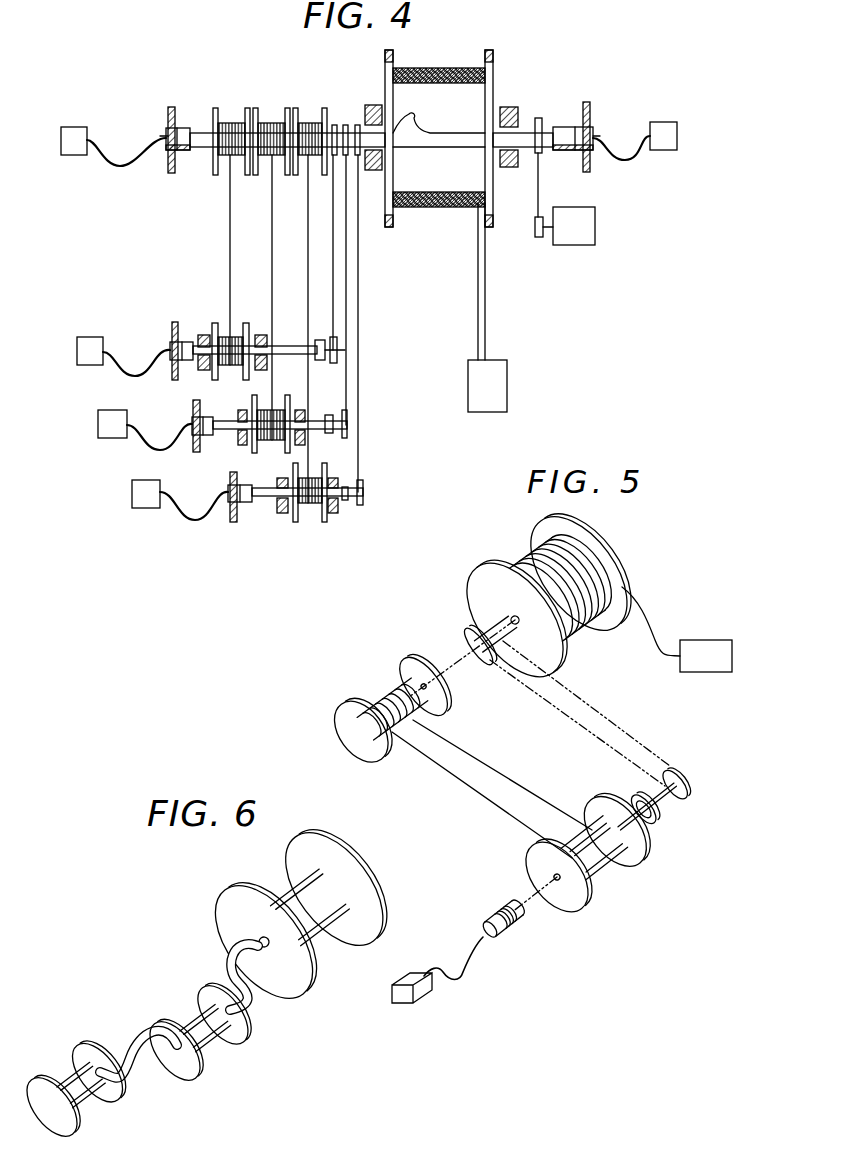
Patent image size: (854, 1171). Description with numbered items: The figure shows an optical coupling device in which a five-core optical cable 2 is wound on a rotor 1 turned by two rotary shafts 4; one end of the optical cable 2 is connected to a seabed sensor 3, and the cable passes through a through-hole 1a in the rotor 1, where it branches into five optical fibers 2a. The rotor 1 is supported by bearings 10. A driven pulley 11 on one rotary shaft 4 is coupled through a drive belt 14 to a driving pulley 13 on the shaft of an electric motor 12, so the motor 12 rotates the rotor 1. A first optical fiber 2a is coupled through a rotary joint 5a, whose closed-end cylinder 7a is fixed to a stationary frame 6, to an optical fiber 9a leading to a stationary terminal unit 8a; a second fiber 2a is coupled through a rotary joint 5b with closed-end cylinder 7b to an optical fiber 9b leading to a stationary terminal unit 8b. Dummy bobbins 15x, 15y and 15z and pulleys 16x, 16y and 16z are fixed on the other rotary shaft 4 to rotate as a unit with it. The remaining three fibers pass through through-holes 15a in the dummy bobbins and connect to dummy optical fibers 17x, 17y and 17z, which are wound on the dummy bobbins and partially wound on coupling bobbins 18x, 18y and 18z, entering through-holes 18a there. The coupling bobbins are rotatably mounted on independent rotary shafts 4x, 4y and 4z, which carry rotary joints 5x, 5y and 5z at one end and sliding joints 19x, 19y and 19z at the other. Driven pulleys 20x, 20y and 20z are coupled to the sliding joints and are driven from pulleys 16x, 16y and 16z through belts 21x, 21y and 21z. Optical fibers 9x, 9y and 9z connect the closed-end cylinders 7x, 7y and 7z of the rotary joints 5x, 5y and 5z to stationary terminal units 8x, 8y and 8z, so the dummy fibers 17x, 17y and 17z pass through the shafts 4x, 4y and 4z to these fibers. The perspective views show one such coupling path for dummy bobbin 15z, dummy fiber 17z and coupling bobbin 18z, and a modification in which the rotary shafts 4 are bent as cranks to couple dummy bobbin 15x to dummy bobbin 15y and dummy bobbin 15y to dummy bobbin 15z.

In FIG. 4, the rotor 1 is at (503, 42).
In FIG. 5, the rotor 1 is at (610, 558).
In FIG. 6, the rotor 1 is at (316, 848).
In FIG. 4, the through-hole 1a is at (414, 114).
In FIG. 4, the optical cable 2 is at (486, 310).
In FIG. 5, the optical cable 2 is at (652, 636).
In FIG. 4, the optical fibers 2a is at (439, 166).
In FIG. 5, the optical fibers 2a is at (470, 645).
In FIG. 4, the seabed sensor 3 is at (503, 378).
In FIG. 5, the seabed sensor 3 is at (708, 648).
In FIG. 4, the rotary shafts 4 is at (201, 133).
In FIG. 5, the rotary shafts 4 is at (478, 660).
In FIG. 6, the rotary shafts 4 is at (130, 1048).
In FIG. 4, the rotary shaft 4x is at (268, 496).
In FIG. 4, the rotary shaft 4y is at (225, 429).
In FIG. 4, the rotary shaft 4z is at (293, 346).
In FIG. 4, the rotary joint 5a is at (568, 127).
In FIG. 4, the rotary joint 5b is at (180, 128).
In FIG. 4, the rotary joint 5x is at (250, 478).
In FIG. 4, the rotary joint 5y is at (205, 417).
In FIG. 4, the rotary joint 5z is at (181, 342).
In FIG. 5, the rotary joint 5z is at (510, 935).
In FIG. 4, the stationary frame 6 is at (170, 170).
In FIG. 4, the closed-end cylinder 7a is at (596, 132).
In FIG. 4, the closed-end cylinder 7b is at (165, 133).
In FIG. 4, the closed-end cylinder 7x is at (230, 520).
In FIG. 4, the closed-end cylinder 7y is at (193, 445).
In FIG. 4, the closed-end cylinder 7z is at (172, 370).
In FIG. 4, the stationary terminal unit 8a is at (666, 128).
In FIG. 4, the stationary terminal unit 8b is at (74, 138).
In FIG. 4, the stationary terminal unit 8x is at (140, 500).
In FIG. 4, the stationary terminal unit 8y is at (107, 430).
In FIG. 4, the stationary terminal unit 8z is at (88, 345).
In FIG. 5, the stationary terminal unit 8z is at (425, 992).
In FIG. 4, the optical fiber 9a is at (638, 160).
In FIG. 4, the optical fiber 9b is at (118, 166).
In FIG. 4, the optical fiber 9x is at (190, 520).
In FIG. 4, the optical fiber 9y is at (160, 448).
In FIG. 4, the optical fiber 9z is at (137, 372).
In FIG. 5, the optical fiber 9z is at (470, 965).
In FIG. 4, the bearings 10 is at (509, 107).
In FIG. 4, the driven pulley 11 is at (538, 118).
In FIG. 4, the electric motor 12 is at (603, 232).
In FIG. 4, the driving pulley 13 is at (533, 240).
In FIG. 4, the drive belt 14 is at (538, 198).
In FIG. 5, the through-holes 15a is at (420, 680).
In FIG. 4, the dummy bobbin 15x is at (310, 123).
In FIG. 6, the dummy bobbin 15x is at (202, 988).
In FIG. 4, the dummy bobbin 15y is at (275, 123).
In FIG. 6, the dummy bobbin 15y is at (95, 1040).
In FIG. 4, the dummy bobbin 15z is at (235, 123).
In FIG. 5, the dummy bobbin 15z is at (382, 760).
In FIG. 4, the pulley 16x is at (357, 125).
In FIG. 4, the pulley 16y is at (345, 125).
In FIG. 4, the pulley 16z is at (334, 125).
In FIG. 5, the pulley 16z is at (472, 630).
In FIG. 4, the dummy optical fiber 17x is at (308, 216).
In FIG. 4, the dummy optical fiber 17y is at (272, 240).
In FIG. 4, the dummy optical fiber 17z is at (230, 262).
In FIG. 5, the dummy optical fiber 17z is at (462, 760).
In FIG. 5, the through-holes 18a is at (592, 878).
In FIG. 4, the coupling bobbin 18x is at (327, 470).
In FIG. 4, the coupling bobbin 18y is at (290, 395).
In FIG. 4, the coupling bobbin 18z is at (222, 337).
In FIG. 5, the coupling bobbin 18z is at (640, 850).
In FIG. 4, the sliding joint 19x is at (346, 500).
In FIG. 4, the sliding joint 19y is at (333, 415).
In FIG. 4, the sliding joint 19z is at (325, 340).
In FIG. 5, the sliding joint 19z is at (652, 812).
In FIG. 4, the driven pulley 20x is at (363, 488).
In FIG. 4, the driven pulley 20y is at (347, 425).
In FIG. 4, the driven pulley 20z is at (337, 344).
In FIG. 5, the driven pulley 20z is at (680, 778).
In FIG. 4, the belt 21x is at (358, 244).
In FIG. 4, the belt 21y is at (346, 268).
In FIG. 4, the belt 21z is at (333, 296).
In FIG. 5, the belt 21z is at (612, 730).